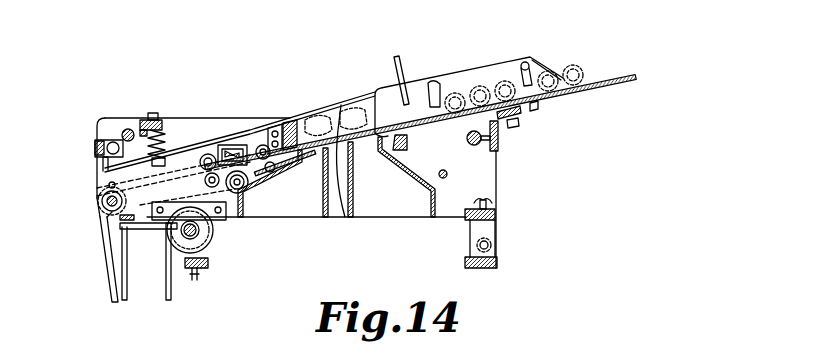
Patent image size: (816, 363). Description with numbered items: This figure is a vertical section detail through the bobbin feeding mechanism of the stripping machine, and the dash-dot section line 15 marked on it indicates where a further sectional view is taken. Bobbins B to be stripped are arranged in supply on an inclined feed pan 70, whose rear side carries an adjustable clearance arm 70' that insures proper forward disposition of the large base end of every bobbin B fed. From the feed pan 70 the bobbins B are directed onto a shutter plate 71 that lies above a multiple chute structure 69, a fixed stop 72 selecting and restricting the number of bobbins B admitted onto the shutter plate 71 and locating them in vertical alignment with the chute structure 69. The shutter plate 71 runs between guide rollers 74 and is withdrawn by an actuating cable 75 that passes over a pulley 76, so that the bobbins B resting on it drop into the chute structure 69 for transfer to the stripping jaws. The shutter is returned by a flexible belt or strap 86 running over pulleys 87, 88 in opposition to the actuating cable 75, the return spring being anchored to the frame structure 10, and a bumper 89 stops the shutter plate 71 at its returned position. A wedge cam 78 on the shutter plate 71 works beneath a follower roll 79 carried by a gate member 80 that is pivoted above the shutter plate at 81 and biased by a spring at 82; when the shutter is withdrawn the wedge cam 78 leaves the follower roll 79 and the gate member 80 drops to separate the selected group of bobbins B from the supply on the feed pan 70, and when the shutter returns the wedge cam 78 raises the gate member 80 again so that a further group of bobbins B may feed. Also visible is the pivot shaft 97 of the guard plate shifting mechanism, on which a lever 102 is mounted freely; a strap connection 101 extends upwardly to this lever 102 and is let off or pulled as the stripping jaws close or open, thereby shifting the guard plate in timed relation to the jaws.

The frame structure 10 is at (500, 238).
The section line 15- 15 is at (197, 190).
The multiple chute structure 69 is at (303, 203).
The inclined feed pan 70 is at (420, 122).
The adjustable clearance arm 70' is at (421, 78).
The shutter plate 71 is at (345, 217).
The fixed stop 72 is at (302, 118).
The guide rollers 74 is at (207, 155).
The actuating cable 75 is at (104, 252).
The pulley 76 is at (100, 200).
The wedge cam 78 is at (288, 165).
The follower roll 79 is at (271, 124).
The gate member 80 is at (374, 96).
The pivot 81 is at (116, 142).
The spring 82 is at (162, 119).
The flexible belt or strap 86 is at (171, 297).
The pulley 87 is at (213, 250).
The pulley 88 is at (235, 218).
The bumper 89 is at (228, 145).
The pivot shaft 97 is at (183, 236).
The strap connection 101 is at (124, 290).
The lever 102 is at (120, 227).
The bobbins B is at (343, 105).